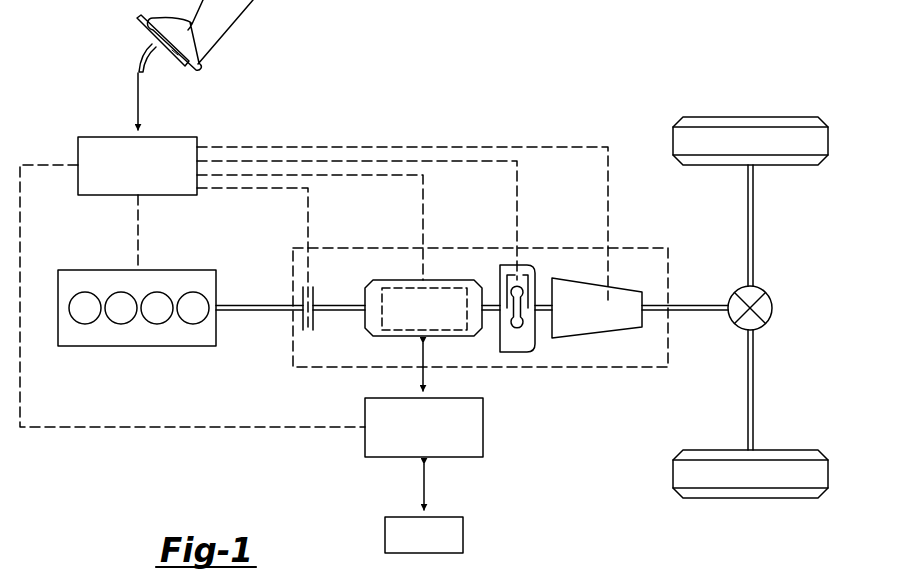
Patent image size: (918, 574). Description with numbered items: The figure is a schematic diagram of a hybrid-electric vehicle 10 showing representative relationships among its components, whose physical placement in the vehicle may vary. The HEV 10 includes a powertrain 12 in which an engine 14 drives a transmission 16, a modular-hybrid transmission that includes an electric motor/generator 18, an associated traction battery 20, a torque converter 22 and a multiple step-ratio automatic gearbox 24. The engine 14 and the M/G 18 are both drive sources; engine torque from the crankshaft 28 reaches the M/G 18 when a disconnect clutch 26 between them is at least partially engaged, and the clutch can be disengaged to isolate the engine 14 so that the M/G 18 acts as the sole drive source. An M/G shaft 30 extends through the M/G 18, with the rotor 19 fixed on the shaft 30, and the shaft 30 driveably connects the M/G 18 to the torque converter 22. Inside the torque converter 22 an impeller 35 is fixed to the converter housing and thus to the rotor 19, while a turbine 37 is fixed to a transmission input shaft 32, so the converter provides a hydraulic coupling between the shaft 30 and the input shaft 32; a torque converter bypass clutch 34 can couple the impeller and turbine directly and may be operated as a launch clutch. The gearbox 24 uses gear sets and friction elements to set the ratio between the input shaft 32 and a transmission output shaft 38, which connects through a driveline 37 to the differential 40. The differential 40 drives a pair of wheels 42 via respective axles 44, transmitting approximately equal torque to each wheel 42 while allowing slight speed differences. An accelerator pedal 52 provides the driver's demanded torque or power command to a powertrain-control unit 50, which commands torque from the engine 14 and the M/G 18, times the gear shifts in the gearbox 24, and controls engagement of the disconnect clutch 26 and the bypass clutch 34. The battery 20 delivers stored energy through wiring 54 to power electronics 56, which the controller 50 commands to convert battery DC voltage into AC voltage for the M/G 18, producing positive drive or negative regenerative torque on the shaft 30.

The hybrid-electric vehicle 10 is at (627, 52).
The powertrain 12 is at (247, 466).
The engine 14 is at (73, 270).
The transmission 16 is at (458, 248).
The electric motor/generator 18 is at (405, 280).
The rotor 19 is at (387, 331).
The traction battery 20 is at (385, 536).
The torque converter 22 is at (512, 352).
The gearbox 24 is at (593, 336).
The disconnect clutch 26 is at (303, 323).
The crankshaft 28 is at (277, 305).
The M/G shaft 30 is at (343, 305).
The transmission input shaft 32 is at (538, 305).
The torque converter bypass clutch 34 is at (519, 265).
The impeller 35 is at (534, 335).
The turbine 37 is at (500, 324).
The transmission output shaft 38 is at (656, 303).
The differential 40 is at (772, 307).
The wheels 42 is at (717, 117).
The axles 44 is at (755, 227).
The powertrain-control unit 50 is at (92, 137).
The accelerator pedal 52 is at (135, 21).
The wiring 54 is at (420, 487).
The power electronics 56 is at (484, 428).